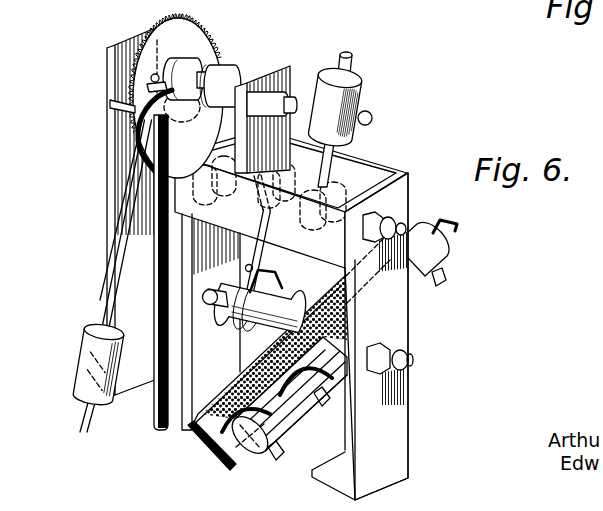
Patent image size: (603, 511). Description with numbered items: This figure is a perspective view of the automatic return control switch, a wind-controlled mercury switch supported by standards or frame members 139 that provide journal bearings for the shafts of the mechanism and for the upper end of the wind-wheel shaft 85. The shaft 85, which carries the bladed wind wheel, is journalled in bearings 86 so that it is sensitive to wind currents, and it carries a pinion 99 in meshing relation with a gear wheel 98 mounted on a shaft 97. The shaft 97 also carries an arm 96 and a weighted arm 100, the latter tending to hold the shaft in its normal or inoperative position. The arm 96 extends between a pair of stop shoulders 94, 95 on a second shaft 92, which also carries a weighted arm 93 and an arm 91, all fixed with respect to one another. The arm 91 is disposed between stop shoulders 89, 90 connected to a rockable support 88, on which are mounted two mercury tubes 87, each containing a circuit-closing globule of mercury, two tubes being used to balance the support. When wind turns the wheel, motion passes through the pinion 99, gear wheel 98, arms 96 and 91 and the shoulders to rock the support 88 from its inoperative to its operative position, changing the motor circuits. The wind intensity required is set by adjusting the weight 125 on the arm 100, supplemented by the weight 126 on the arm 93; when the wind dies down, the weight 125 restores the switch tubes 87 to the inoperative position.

The shaft 85 is at (156, 200).
The bearings 86 is at (133, 107).
The tube 87 is at (413, 292).
The rockable support 88 is at (215, 452).
The stop shoulder 89 is at (240, 307).
The stop shoulder 90 is at (270, 282).
The arm 91 is at (272, 250).
The shaft 92 is at (330, 233).
The weighted arm 93 is at (353, 57).
The stop shoulder 94 is at (182, 107).
The stop shoulder 95 is at (293, 147).
The arm 96 is at (280, 125).
The shaft 97 is at (207, 77).
The gear wheel 98 is at (195, 38).
The pinion 99 is at (142, 142).
The weighted arm 100 is at (111, 279).
The weight 125 is at (84, 353).
The weight 126 is at (360, 90).
The frame members 139 is at (200, 242).